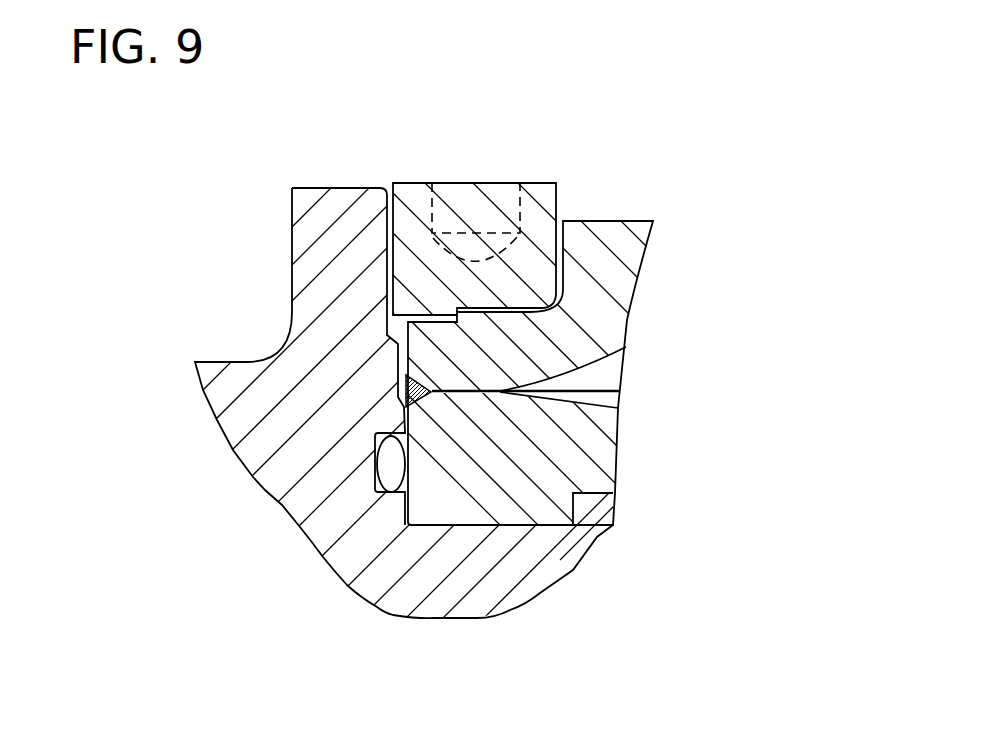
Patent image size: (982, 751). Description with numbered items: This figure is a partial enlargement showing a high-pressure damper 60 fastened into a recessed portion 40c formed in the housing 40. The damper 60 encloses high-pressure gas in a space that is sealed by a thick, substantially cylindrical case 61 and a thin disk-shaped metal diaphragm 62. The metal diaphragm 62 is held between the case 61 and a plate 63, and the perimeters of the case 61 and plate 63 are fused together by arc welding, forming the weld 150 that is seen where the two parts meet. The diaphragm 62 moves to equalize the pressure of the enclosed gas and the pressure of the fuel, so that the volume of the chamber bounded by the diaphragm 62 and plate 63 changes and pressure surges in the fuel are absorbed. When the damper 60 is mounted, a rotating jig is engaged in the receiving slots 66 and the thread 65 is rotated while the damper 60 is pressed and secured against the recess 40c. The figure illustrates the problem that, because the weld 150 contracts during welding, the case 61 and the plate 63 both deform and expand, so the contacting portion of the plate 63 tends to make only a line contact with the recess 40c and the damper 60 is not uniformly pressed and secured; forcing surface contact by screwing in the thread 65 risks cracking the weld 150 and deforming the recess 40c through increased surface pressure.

The housing 40 is at (338, 207).
The recessed portion 40c is at (612, 528).
The high-pressure damper 60 is at (542, 340).
The case 61 is at (588, 242).
The metal diaphragm 62 is at (618, 408).
The plate 63 is at (585, 520).
The thread 65 is at (533, 213).
The receiving slots 66 is at (465, 200).
The weld 150 is at (407, 398).